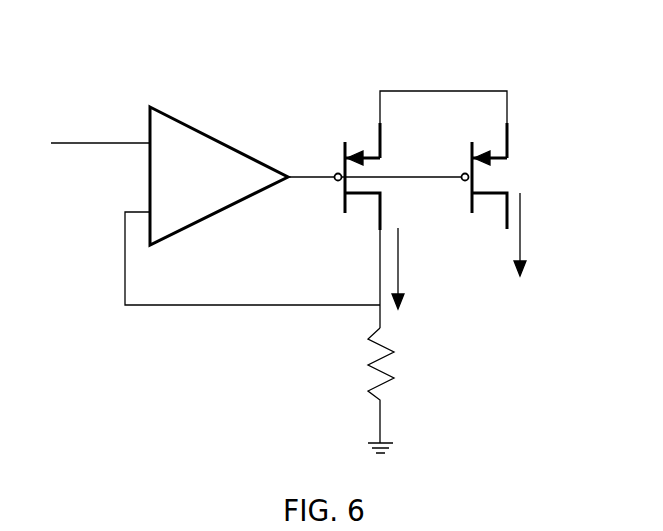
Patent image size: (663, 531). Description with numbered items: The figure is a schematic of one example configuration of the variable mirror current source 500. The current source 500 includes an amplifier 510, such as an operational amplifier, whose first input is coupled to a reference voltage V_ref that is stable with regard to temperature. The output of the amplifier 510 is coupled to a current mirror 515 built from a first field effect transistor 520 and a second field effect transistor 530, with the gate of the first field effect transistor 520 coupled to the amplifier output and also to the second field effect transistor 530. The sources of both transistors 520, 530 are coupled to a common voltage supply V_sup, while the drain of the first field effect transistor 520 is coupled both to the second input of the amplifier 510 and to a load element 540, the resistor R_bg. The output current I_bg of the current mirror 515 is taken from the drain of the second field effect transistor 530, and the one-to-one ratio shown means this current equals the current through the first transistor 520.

The variable mirror current source 500 is at (96, 66).
The amplifier 510 is at (205, 135).
The current mirror 515 is at (533, 92).
The first field effect transistor 520 is at (345, 142).
The second field effect transistor 530 is at (508, 152).
The load element 540 is at (392, 395).